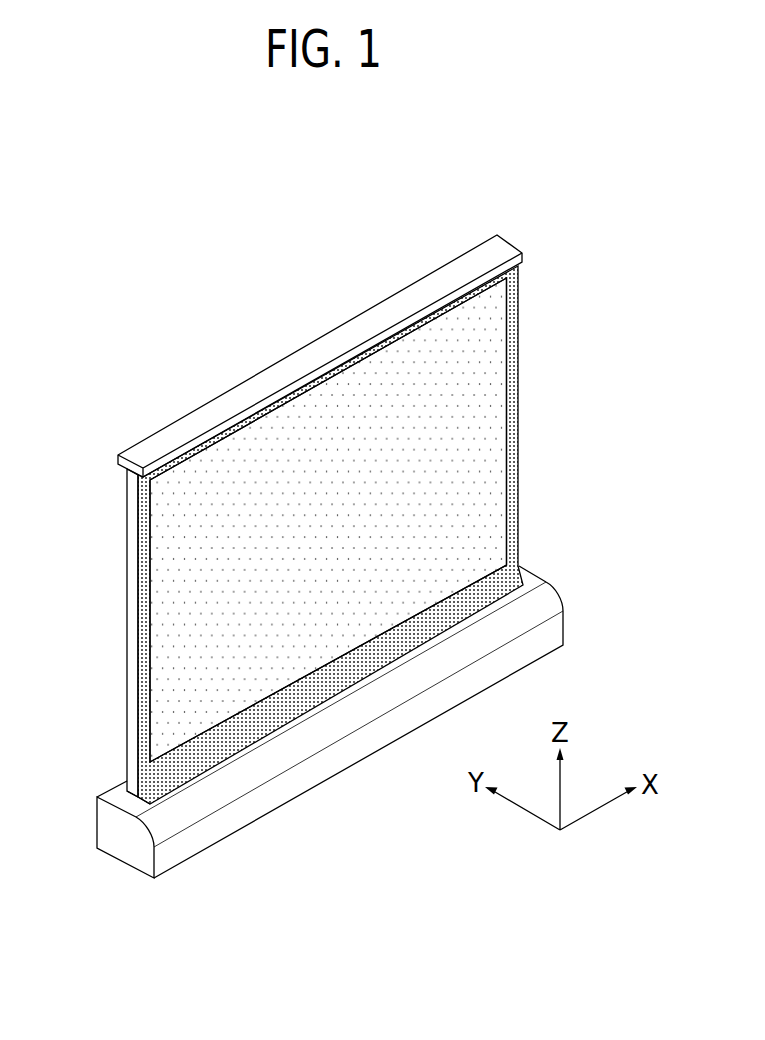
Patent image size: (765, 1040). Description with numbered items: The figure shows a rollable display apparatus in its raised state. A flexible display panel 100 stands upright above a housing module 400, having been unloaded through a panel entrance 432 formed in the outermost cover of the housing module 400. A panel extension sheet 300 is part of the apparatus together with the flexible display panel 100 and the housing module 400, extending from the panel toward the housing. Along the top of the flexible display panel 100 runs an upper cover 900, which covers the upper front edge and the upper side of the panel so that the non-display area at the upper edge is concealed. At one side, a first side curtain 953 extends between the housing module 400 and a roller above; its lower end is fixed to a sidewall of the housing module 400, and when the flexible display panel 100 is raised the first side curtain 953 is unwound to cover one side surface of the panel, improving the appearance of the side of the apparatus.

The upper cover 900 is at (157, 440).
The flexible display panel 100 is at (520, 391).
The panel extension sheet 300 is at (519, 568).
The first side curtain 953 is at (127, 620).
The housing module 400 is at (538, 603).
The panel entrance 432 is at (125, 790).